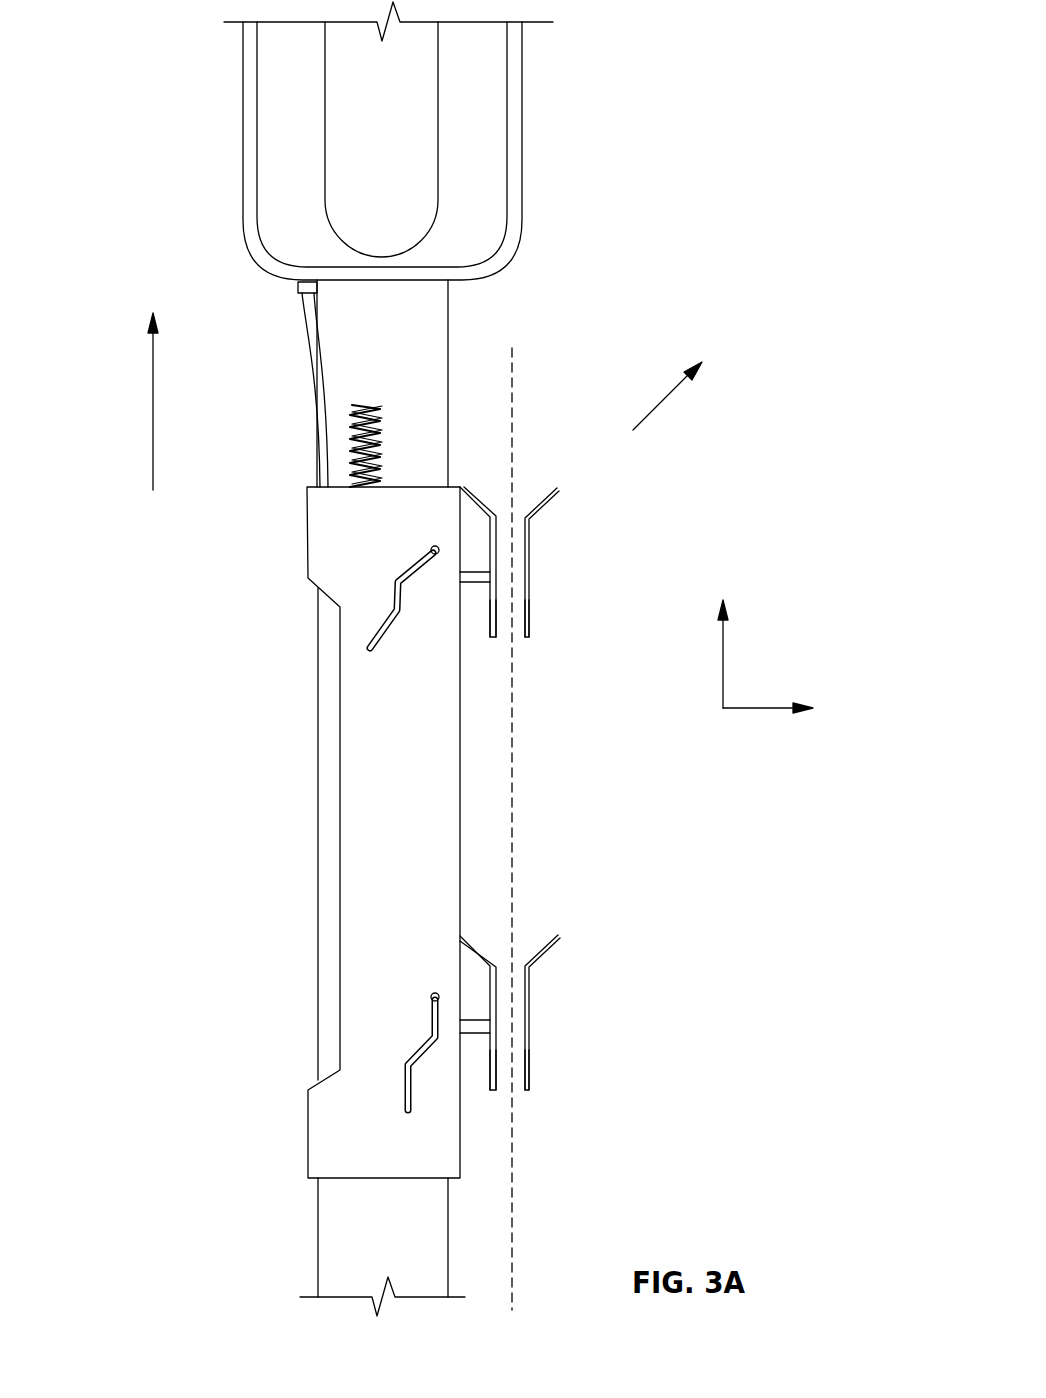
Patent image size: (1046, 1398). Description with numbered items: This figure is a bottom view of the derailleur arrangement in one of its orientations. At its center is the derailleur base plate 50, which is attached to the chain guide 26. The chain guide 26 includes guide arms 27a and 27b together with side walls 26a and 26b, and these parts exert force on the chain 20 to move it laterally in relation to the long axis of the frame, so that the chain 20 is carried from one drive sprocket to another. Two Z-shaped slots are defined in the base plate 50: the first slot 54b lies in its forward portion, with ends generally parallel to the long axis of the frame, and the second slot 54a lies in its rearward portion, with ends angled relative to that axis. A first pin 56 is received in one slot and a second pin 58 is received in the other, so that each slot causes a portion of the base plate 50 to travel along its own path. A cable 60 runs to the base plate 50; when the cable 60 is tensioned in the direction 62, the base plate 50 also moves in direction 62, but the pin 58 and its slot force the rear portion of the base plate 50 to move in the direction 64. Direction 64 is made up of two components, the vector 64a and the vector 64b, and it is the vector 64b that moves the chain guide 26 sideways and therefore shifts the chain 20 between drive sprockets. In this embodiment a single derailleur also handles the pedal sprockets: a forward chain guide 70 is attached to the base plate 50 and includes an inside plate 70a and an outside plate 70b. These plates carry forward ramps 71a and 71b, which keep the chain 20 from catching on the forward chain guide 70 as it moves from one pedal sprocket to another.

The chain 20 is at (530, 582).
The chain guide 26 is at (555, 994).
The side wall 26a is at (497, 1085).
The side wall 26b is at (527, 1063).
The guide arm 27a is at (465, 943).
The guide arm 27b is at (538, 945).
The derailleur base plate 50 is at (360, 698).
The second slot 54a is at (393, 598).
The first slot 54b is at (400, 1068).
The first pin 56 is at (432, 548).
The second pin 58 is at (431, 993).
The cable 60 is at (308, 360).
The direction 62 is at (152, 423).
The direction 64 is at (670, 397).
The vector 64a is at (723, 655).
The vector 64b is at (765, 708).
The forward chain guide 70 is at (545, 567).
The inside plate 70a is at (498, 640).
The outside plate 70b is at (528, 630).
The forward ramp 71a is at (487, 503).
The forward ramp 71b is at (542, 487).